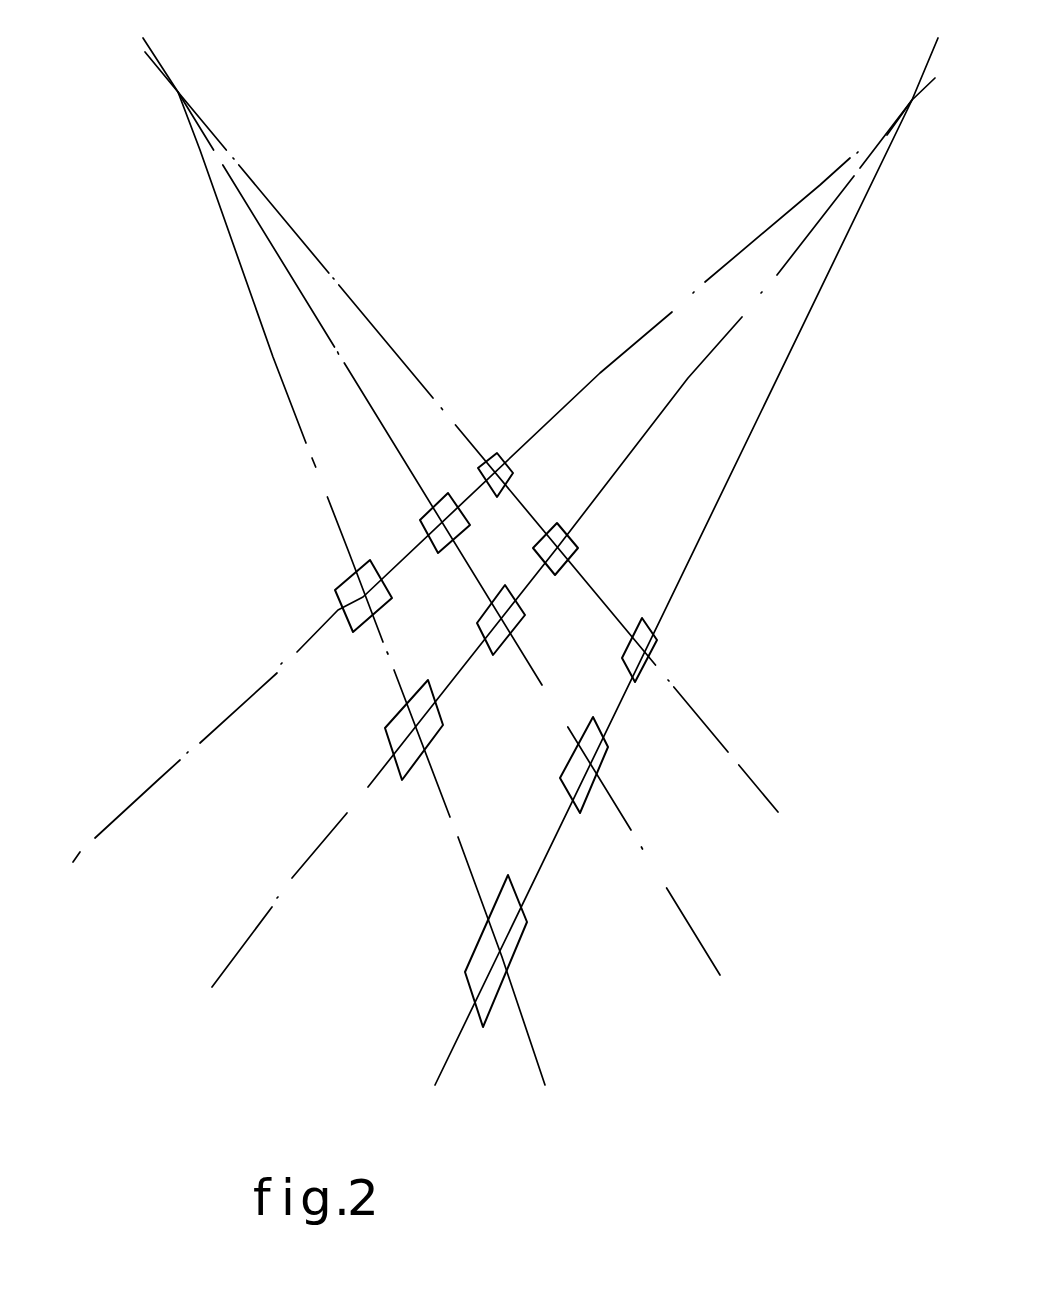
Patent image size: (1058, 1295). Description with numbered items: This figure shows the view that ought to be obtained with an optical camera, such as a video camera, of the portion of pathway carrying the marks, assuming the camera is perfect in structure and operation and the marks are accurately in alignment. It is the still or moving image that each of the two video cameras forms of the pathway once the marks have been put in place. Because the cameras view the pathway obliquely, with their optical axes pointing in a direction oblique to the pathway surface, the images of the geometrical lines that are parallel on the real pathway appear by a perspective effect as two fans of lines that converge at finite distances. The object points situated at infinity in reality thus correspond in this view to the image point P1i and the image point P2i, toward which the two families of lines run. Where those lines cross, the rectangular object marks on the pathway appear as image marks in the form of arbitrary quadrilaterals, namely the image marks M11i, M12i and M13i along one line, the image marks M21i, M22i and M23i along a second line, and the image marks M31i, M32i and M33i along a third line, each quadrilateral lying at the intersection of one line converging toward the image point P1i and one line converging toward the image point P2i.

The image point P1i is at (912, 101).
The image point P2i is at (178, 92).
The image mark M11i is at (496, 453).
The image mark M12i is at (428, 518).
The image mark M13i is at (338, 588).
The image mark M21i is at (557, 533).
The image mark M22i is at (483, 615).
The image mark M23i is at (387, 743).
The image mark M31i is at (657, 638).
The image mark M32i is at (567, 778).
The image mark M33i is at (495, 956).